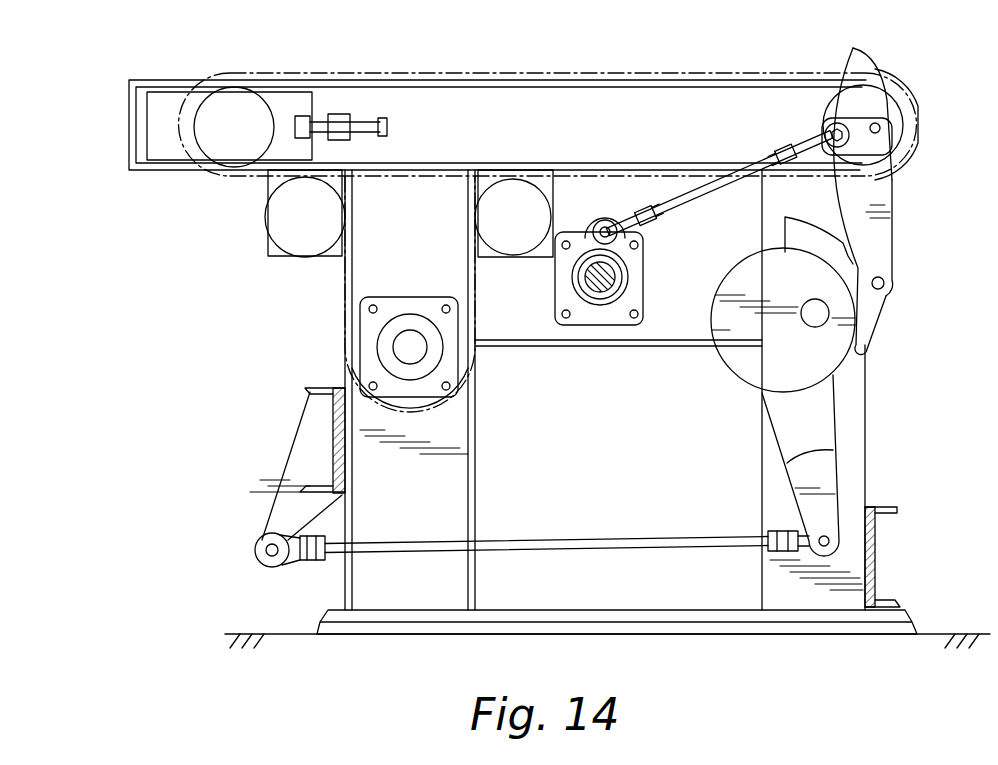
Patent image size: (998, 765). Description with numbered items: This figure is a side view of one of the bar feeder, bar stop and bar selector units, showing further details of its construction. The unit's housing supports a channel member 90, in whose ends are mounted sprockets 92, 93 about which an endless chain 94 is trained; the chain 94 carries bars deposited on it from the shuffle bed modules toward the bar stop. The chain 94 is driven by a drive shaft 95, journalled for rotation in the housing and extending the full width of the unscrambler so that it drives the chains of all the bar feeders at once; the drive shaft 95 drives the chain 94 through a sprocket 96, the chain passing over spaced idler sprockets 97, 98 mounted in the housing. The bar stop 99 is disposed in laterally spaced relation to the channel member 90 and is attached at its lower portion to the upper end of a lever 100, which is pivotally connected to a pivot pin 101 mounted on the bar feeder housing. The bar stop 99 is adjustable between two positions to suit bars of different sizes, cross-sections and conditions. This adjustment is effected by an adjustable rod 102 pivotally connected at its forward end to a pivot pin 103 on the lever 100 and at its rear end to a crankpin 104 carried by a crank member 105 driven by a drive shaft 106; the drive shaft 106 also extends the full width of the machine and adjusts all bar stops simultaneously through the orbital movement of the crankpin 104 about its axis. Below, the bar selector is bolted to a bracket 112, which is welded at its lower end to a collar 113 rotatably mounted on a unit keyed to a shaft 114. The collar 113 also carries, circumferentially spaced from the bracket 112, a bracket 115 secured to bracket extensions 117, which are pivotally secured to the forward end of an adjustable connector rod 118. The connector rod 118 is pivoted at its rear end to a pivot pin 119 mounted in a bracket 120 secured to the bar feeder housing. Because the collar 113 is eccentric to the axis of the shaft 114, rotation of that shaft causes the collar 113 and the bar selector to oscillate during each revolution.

The channel member 90 is at (521, 107).
The endless chain 94 is at (635, 73).
The sprocket 92 is at (200, 172).
The sprocket 93 is at (828, 97).
The bar stop 99 is at (866, 64).
The pivot pin 103 is at (825, 135).
The adjustable rod 102 is at (697, 196).
The crankpin 104 is at (609, 226).
The idler sprocket 98 is at (552, 226).
The idler sprocket 97 is at (305, 258).
The drive shaft 95 is at (397, 343).
The sprocket 96 is at (430, 408).
The crank member 105 is at (630, 278).
The drive shaft 106 is at (598, 290).
The lever 100 is at (880, 196).
The bracket 112 is at (838, 260).
The pivot pin 101 is at (885, 283).
The collar 113 is at (836, 370).
The shaft 114 is at (820, 326).
The bracket 115 is at (822, 425).
The bracket extension 117 is at (832, 477).
The adjustable connector rod 118 is at (646, 546).
The pivot pin 119 is at (266, 560).
The bracket 120 is at (287, 473).